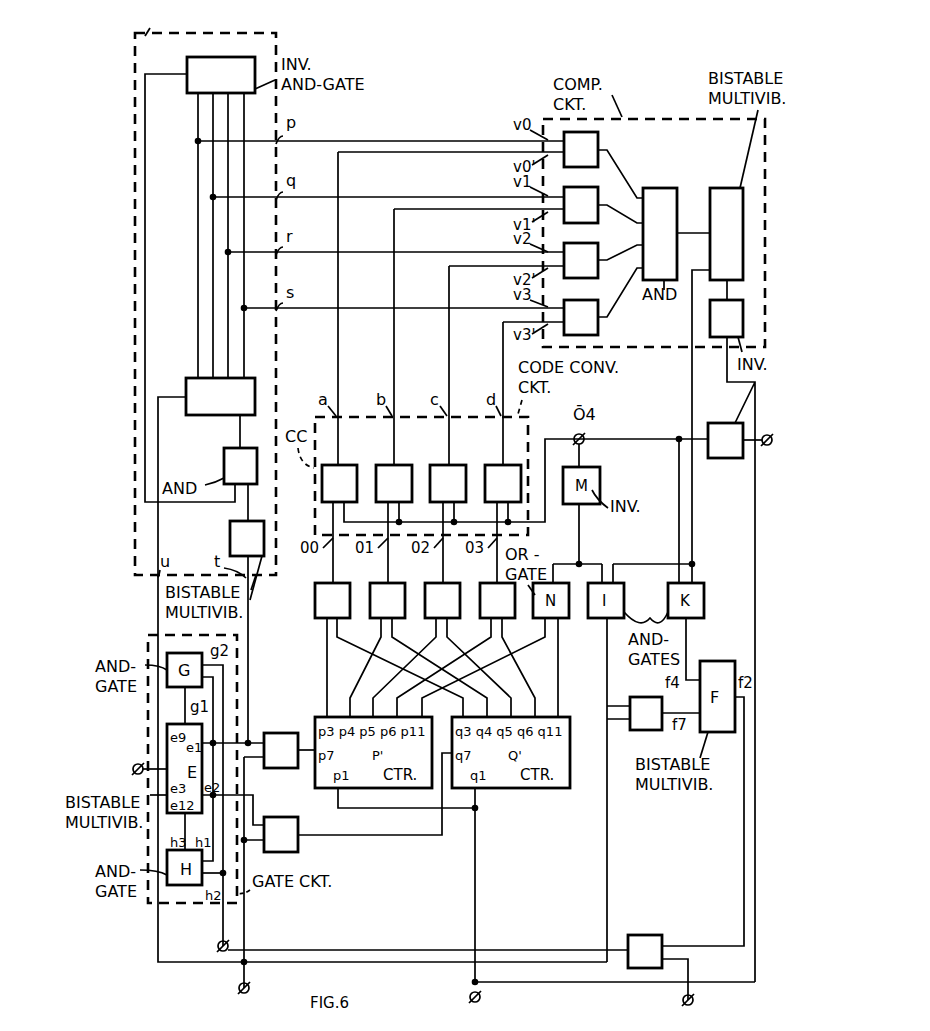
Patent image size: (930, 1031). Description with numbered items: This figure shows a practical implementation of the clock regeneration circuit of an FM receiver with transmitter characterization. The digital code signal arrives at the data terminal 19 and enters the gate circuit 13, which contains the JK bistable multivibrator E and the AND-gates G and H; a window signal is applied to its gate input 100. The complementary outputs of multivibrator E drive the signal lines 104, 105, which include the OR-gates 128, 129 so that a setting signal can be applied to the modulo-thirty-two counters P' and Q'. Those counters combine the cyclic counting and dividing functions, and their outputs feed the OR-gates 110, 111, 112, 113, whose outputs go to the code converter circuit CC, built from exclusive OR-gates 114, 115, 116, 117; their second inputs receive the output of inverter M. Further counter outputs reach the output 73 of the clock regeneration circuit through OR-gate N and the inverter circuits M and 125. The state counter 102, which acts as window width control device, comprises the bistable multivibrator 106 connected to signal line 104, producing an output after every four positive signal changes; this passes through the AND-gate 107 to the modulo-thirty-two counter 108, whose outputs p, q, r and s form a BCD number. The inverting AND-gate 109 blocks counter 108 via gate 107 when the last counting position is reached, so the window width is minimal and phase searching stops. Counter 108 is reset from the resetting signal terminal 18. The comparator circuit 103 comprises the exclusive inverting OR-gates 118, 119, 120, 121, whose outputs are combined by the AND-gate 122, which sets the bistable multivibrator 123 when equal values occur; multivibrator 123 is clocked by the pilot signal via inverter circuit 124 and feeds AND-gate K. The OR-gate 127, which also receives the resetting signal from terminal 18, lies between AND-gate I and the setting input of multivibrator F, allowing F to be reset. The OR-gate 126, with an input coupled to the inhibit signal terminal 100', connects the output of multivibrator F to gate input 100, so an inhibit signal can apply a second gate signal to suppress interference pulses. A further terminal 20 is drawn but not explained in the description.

The gate circuit 13 is at (148, 903).
The resetting signal terminal 18 is at (239, 992).
The data terminal 19 is at (139, 764).
The terminal 20 is at (470, 996).
The output of the clock regeneration circuit 73 is at (767, 446).
The gate input 100 is at (207, 947).
The inhibit signal terminal 100' is at (669, 1000).
The state counter 102 is at (140, 580).
The comparator circuit 103 is at (662, 117).
The signal line 104 is at (256, 741).
The signal line 105 is at (253, 800).
The bistable multivibrator 106 is at (230, 538).
The AND-gate 107 is at (224, 467).
The modulo-32-counter 108 is at (206, 415).
The inverting AND-gate 109 is at (190, 62).
The OR-gate 110 is at (328, 581).
The OR-gate 111 is at (382, 581).
The OR-gate 112 is at (437, 581).
The OR-gate 113 is at (492, 581).
The exclusive OR-gate 114 is at (350, 457).
The exclusive OR-gate 115 is at (396, 465).
The exclusive OR-gate 116 is at (452, 465).
The exclusive OR-gate 117 is at (505, 465).
The exclusive inverting OR-gate 118 is at (598, 140).
The exclusive inverting OR-gate 119 is at (590, 187).
The exclusive inverting OR-gate 120 is at (592, 243).
The exclusive inverting OR-gate 121 is at (592, 300).
The AND-gate 122 is at (662, 188).
The bistable multivibrator 123 is at (728, 188).
The inverter circuit 124 is at (710, 322).
The inverter circuit 125 is at (724, 423).
The OR-gate 126 is at (650, 928).
The OR-gate 127 is at (636, 697).
The OR-gate 128 is at (290, 730).
The OR-gate 129 is at (290, 814).